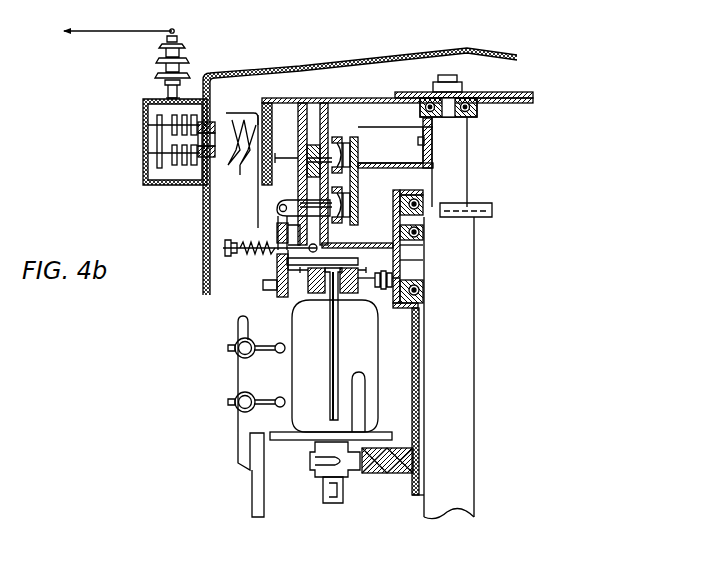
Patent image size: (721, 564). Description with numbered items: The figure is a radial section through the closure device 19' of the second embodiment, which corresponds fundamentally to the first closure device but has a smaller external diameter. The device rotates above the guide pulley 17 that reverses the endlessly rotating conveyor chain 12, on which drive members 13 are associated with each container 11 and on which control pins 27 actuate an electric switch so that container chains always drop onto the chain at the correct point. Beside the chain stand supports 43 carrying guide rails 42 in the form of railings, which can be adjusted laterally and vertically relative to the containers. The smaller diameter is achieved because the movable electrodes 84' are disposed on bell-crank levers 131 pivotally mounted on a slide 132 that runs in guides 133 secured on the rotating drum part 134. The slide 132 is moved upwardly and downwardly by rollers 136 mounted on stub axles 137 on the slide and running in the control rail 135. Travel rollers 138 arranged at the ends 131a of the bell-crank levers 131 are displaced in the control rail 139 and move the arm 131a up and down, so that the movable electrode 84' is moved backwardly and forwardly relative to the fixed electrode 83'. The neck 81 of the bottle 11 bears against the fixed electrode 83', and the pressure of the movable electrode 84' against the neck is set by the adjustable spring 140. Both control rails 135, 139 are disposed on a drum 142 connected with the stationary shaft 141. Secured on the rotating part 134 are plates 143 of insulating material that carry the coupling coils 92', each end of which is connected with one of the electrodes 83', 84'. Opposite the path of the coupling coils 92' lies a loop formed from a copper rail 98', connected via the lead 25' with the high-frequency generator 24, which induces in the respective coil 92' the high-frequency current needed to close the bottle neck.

The high-frequency generator 24 is at (103, 31).
The lead 25' is at (138, 66).
The copper rail 98' is at (179, 157).
The closure device 19' is at (340, 195).
The plates 143 is at (265, 110).
The coupling coils 92' is at (239, 158).
The guides 133 is at (310, 124).
The rotating drum part 134 is at (328, 110).
The slide 132 is at (312, 175).
The stub axles 137 is at (335, 138).
The rollers 136 is at (357, 142).
The control rail 135 is at (358, 160).
The drum 142 is at (362, 165).
The ends of the bell crank levers 131a is at (354, 194).
The travel rollers 138 is at (357, 207).
The control rail 139 is at (352, 226).
The stationary shaft 141 is at (462, 186).
The adjustable spring 140 is at (257, 259).
The bell-crank levers 131 is at (277, 272).
The movable electrode 84' is at (312, 292).
The fixed electrode 83' is at (370, 295).
The neck 81 is at (331, 298).
The container 11 is at (372, 337).
The drive members 13 is at (362, 397).
The conveyor chain 12 is at (312, 479).
The control pins 27 is at (340, 492).
The guide pulley 17 is at (390, 472).
The supports 43 is at (243, 382).
The guide rails 42 is at (280, 397).